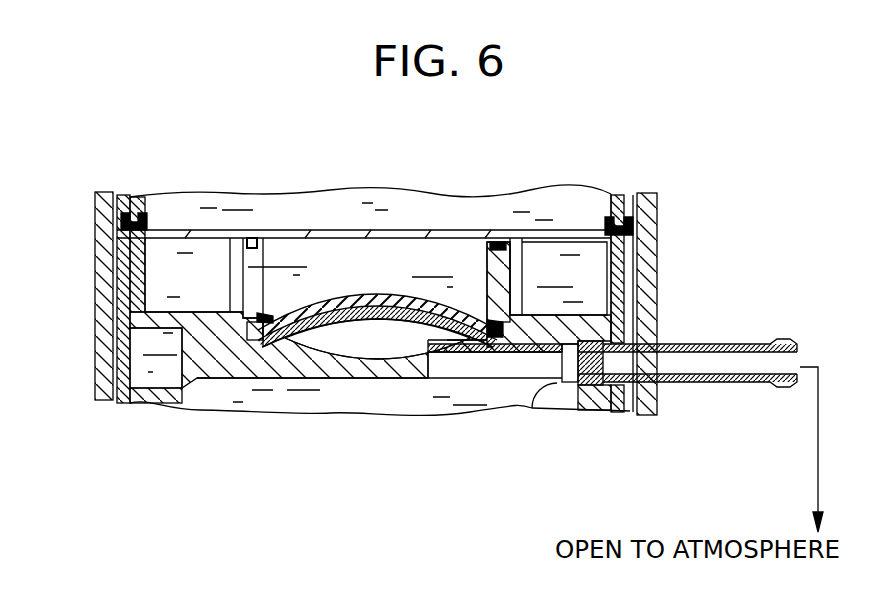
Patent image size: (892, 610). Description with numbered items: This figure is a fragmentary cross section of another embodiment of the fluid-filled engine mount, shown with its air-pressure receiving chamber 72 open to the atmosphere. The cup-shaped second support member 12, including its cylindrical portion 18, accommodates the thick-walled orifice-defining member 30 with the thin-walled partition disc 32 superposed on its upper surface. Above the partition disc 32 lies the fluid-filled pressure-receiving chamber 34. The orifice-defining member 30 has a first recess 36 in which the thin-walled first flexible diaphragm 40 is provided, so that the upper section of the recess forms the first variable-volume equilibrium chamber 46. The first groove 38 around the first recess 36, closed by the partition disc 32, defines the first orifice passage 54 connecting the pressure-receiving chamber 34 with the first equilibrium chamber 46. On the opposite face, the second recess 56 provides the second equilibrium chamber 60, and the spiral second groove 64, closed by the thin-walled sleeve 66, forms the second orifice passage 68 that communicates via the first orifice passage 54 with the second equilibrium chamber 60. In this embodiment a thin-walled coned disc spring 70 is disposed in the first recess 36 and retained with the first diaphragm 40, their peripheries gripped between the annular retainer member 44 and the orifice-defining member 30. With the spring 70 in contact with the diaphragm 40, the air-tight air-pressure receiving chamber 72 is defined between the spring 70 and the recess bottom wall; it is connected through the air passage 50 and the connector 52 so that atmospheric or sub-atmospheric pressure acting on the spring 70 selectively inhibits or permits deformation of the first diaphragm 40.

The second rigid support member 12 is at (84, 283).
The cylindrical portion 18 is at (108, 322).
The orifice-defining member 30 is at (636, 272).
The partition disc 32 is at (267, 230).
The pressure-receiving chamber 34 is at (458, 207).
The first recess 36 is at (322, 307).
The first groove 38 is at (157, 228).
The first flexible diaphragm 40 is at (463, 316).
The annular retainer member 44 is at (500, 268).
The first variable-volume equilibrium chamber 46 is at (398, 250).
The air passage 50 is at (500, 365).
The connector 52 is at (708, 385).
The first orifice passage 54 is at (590, 302).
The second recess 56 is at (527, 390).
The second variable-volume equilibrium chamber 60 is at (368, 395).
The second groove 64 is at (130, 385).
The thin-walled sleeve 66 is at (122, 253).
The second orifice passage 68 is at (135, 362).
The coned disc spring 70 is at (415, 333).
The air-pressure receiving chamber 72 is at (348, 340).